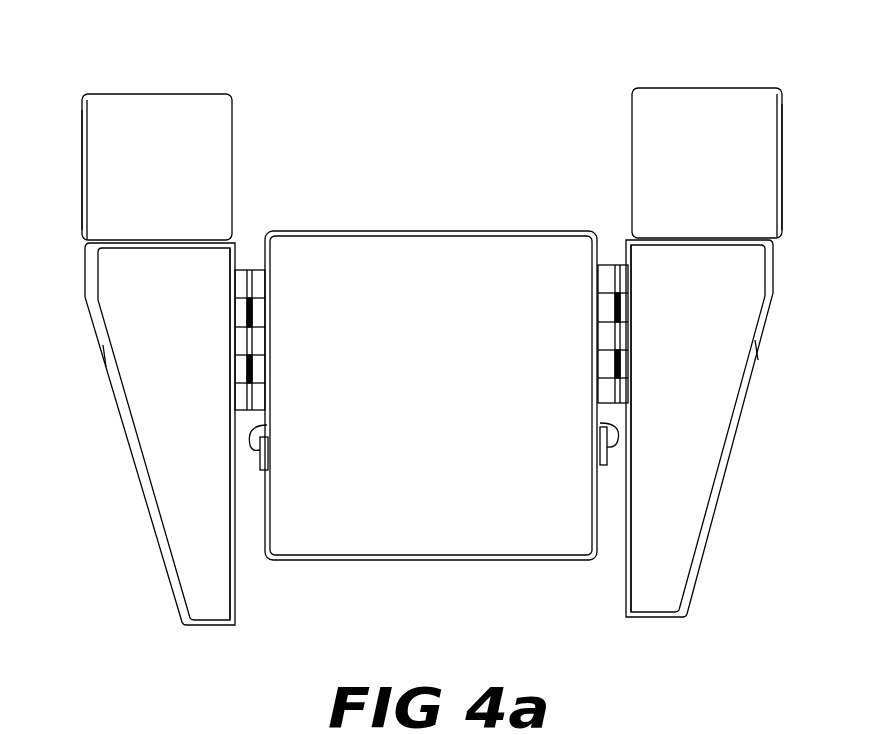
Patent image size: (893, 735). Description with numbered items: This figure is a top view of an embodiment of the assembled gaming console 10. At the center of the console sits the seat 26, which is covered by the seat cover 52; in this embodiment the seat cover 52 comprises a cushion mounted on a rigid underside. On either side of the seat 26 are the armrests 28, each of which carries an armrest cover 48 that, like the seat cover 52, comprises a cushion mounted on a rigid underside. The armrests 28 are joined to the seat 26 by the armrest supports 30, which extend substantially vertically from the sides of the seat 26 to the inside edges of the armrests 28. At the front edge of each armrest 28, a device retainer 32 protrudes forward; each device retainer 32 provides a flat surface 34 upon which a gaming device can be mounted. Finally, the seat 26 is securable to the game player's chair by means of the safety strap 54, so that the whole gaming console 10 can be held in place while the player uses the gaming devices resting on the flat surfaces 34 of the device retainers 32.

The gaming console 10 is at (355, 68).
The seat 26 is at (431, 424).
The armrest 28 is at (428, 432).
The armrest support 30 is at (259, 275).
The device retainer 32 is at (110, 189).
The flat surface 34 is at (172, 103).
The armrest cover 48 is at (175, 530).
The seat cover 52 is at (490, 536).
The safety strap 54 is at (268, 426).